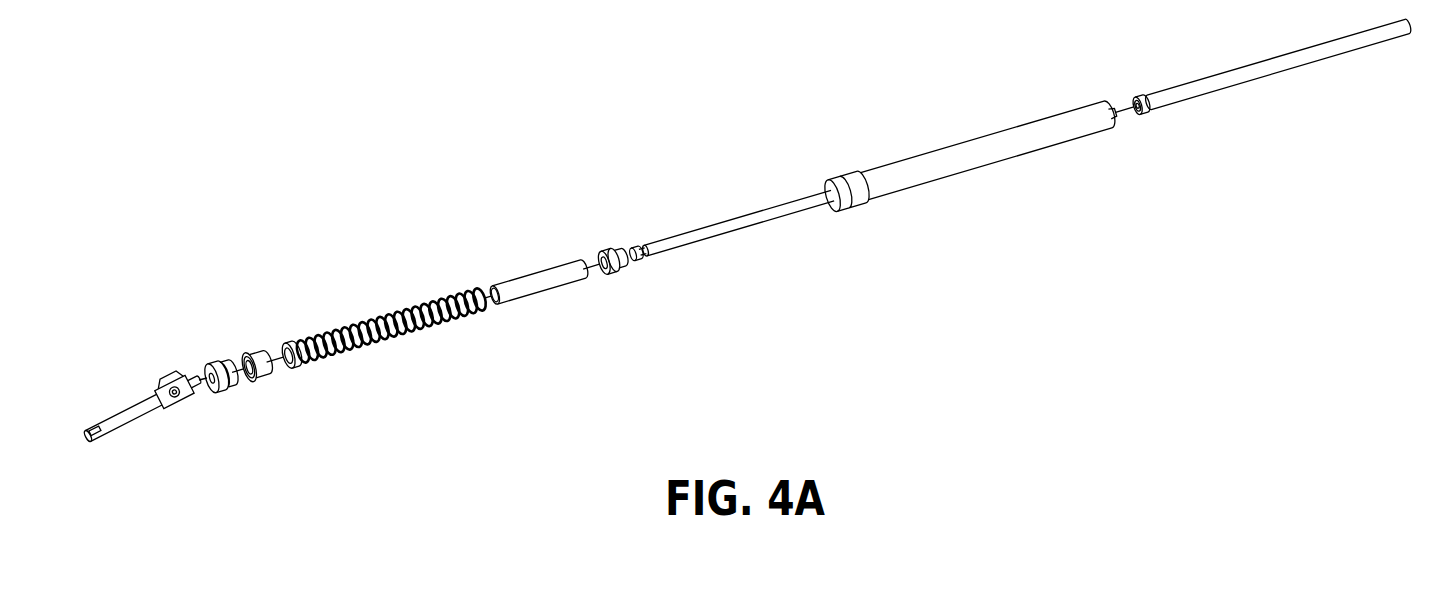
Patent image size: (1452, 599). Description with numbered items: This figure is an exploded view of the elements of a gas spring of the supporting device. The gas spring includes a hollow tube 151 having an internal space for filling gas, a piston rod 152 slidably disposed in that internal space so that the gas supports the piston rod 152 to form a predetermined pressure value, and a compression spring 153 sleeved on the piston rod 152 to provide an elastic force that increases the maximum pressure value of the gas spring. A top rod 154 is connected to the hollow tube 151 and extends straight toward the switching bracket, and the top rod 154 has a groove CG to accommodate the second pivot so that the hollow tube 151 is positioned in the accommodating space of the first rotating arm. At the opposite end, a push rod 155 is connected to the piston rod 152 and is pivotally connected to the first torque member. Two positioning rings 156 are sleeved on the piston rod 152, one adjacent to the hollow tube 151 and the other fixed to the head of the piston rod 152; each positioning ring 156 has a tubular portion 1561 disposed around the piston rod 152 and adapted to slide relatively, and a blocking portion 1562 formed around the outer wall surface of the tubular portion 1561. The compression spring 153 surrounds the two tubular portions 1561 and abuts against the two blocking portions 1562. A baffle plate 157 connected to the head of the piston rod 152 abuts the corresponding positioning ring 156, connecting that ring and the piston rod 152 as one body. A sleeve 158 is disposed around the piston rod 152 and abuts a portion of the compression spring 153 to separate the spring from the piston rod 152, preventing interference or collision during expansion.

The hollow tube 151 is at (990, 155).
The piston rod 152 is at (747, 227).
The compression spring 153 is at (403, 337).
The top rod 154 is at (1297, 64).
The push rod 155 is at (133, 412).
The positioning ring 156 is at (465, 368).
The tubular portion 1561 is at (282, 372).
The blocking portion 1562 is at (262, 384).
The baffle plate 157 is at (224, 394).
The sleeve 158 is at (542, 287).
The groove CG is at (1400, 36).